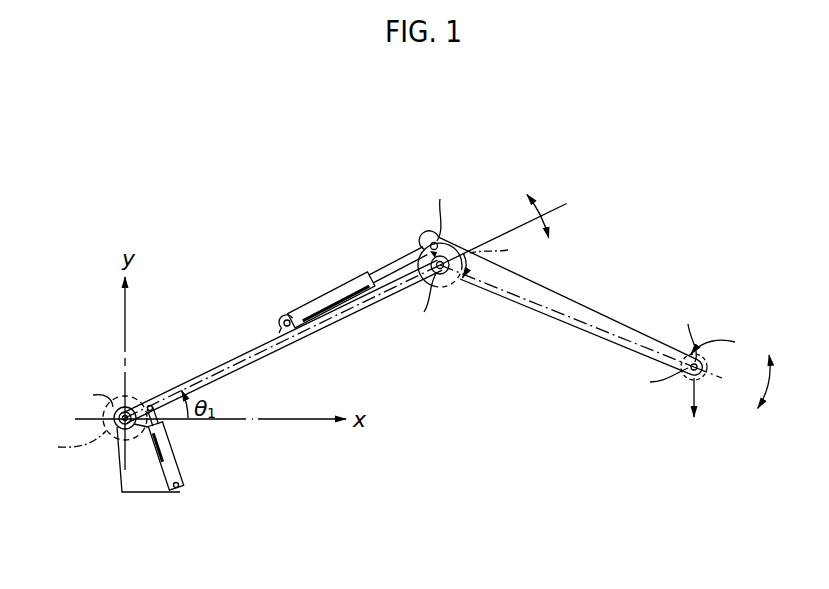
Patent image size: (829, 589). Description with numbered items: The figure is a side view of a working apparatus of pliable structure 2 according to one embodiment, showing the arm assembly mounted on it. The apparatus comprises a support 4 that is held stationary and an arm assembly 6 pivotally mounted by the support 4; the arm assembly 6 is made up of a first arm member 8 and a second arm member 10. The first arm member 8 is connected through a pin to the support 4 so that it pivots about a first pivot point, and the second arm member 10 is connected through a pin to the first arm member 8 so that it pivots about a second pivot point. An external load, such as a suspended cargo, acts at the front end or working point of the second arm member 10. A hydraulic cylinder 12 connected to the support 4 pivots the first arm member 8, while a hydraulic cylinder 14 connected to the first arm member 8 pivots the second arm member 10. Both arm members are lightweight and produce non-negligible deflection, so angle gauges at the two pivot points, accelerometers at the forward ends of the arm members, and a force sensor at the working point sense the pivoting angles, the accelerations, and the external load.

The working apparatus of pliable structure 2 is at (279, 464).
The support 4 is at (117, 489).
The arm assembly 6 is at (452, 321).
The first arm member 8 is at (236, 357).
The second arm member 10 is at (579, 301).
The hydraulic cylinder 12 is at (179, 454).
The hydraulic cylinder 14 is at (334, 291).